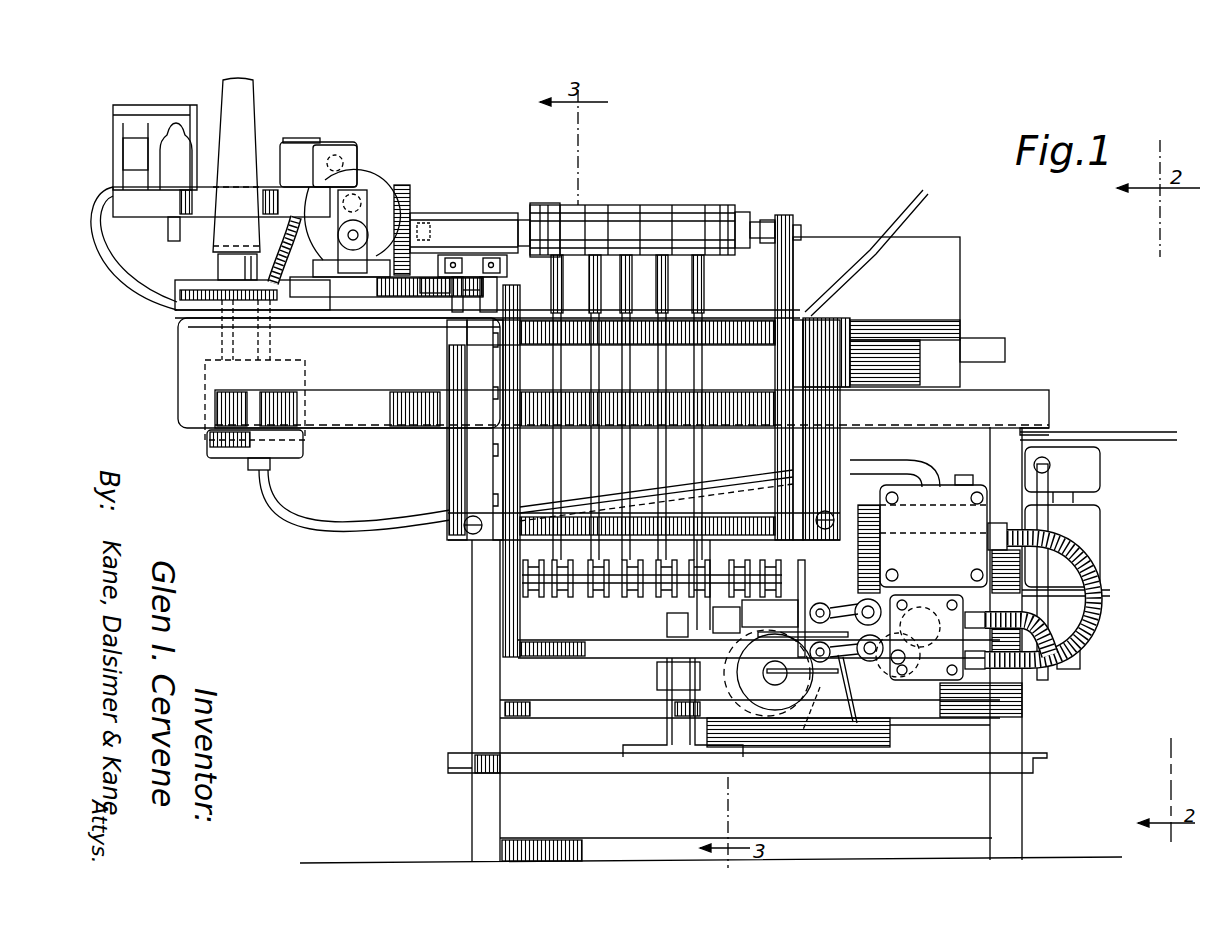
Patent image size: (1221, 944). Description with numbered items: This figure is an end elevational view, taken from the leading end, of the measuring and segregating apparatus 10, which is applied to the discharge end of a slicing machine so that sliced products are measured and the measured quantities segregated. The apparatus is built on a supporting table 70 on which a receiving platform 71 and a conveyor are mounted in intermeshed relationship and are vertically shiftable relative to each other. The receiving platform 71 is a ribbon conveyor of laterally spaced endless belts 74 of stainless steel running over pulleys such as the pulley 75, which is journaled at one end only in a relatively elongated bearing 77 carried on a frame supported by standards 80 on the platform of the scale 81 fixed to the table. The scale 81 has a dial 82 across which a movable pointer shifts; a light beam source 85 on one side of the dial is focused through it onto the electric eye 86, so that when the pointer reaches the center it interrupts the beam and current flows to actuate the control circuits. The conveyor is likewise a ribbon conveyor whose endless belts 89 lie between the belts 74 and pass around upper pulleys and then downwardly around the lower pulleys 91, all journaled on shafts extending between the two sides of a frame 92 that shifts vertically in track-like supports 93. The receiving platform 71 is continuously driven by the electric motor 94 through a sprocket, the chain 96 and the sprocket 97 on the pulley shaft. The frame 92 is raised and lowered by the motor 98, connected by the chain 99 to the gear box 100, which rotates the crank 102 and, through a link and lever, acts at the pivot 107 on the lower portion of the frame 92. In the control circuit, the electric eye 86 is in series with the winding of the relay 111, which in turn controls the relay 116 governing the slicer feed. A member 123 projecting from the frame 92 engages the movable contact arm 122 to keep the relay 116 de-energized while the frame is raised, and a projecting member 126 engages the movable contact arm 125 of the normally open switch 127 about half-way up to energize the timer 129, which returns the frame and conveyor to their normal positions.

The measuring and segregating apparatus 10 is at (668, 191).
The supporting table 70 is at (467, 682).
The receiving platform 71 is at (626, 205).
The endless belts 74 is at (577, 206).
The pulley 75 is at (736, 210).
The bearing 77 is at (468, 213).
The standards 80 is at (447, 298).
The scale 81 is at (339, 370).
The dial 82 is at (256, 114).
The light beam source 85 is at (305, 146).
The electric eye 86 is at (178, 130).
The endless belts 89 is at (562, 461).
The pulleys 91 is at (557, 590).
The frame 92 is at (793, 272).
The track-like supports 93 is at (495, 430).
The electric motor 94 is at (392, 185).
The chain 96 is at (410, 198).
The sprocket 97 is at (437, 257).
The motor 98 is at (933, 683).
The chain 99 is at (883, 685).
The gear box 100 is at (797, 593).
The crank 102 is at (677, 682).
The pivot 107 is at (657, 685).
The relay 111 is at (227, 447).
The relay 116 is at (932, 503).
The movable contact arm 122 is at (850, 700).
The member 123 is at (830, 700).
The movable contact arm 125 is at (836, 600).
The projecting member 126 is at (800, 610).
The switch 127 is at (907, 634).
The timer 129 is at (1104, 557).